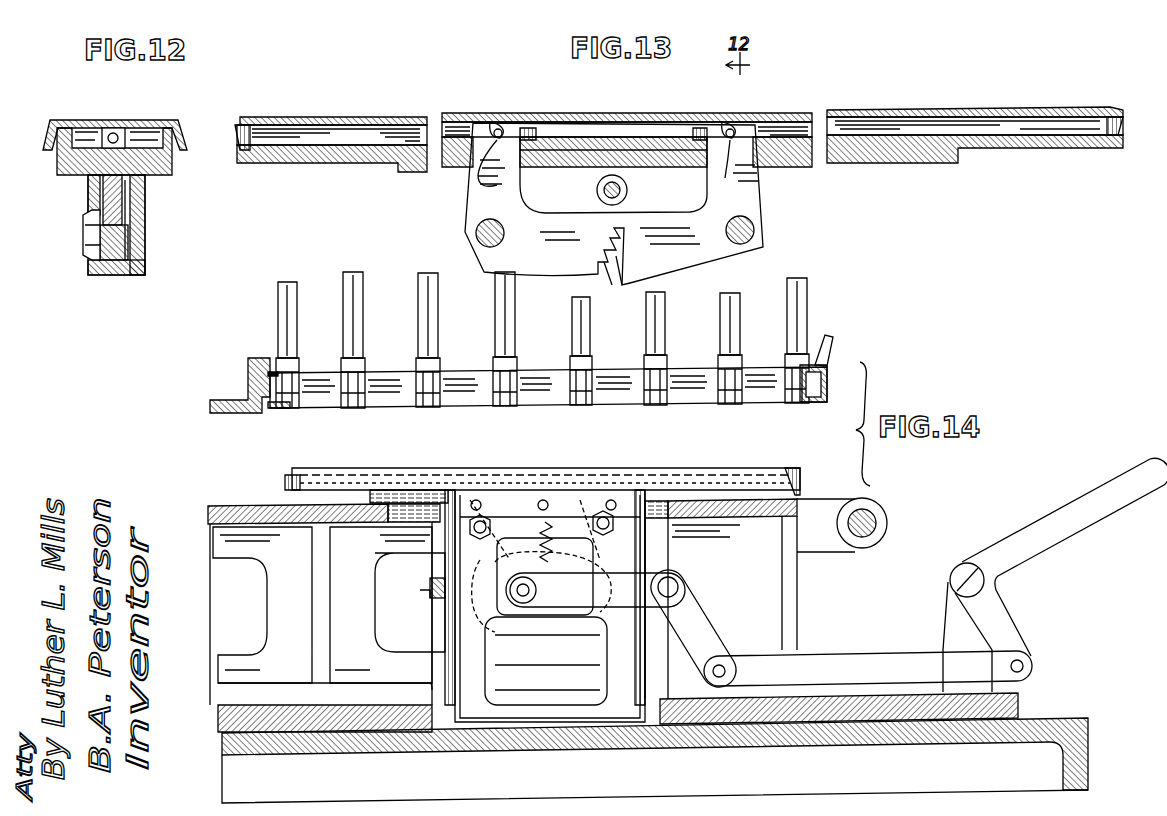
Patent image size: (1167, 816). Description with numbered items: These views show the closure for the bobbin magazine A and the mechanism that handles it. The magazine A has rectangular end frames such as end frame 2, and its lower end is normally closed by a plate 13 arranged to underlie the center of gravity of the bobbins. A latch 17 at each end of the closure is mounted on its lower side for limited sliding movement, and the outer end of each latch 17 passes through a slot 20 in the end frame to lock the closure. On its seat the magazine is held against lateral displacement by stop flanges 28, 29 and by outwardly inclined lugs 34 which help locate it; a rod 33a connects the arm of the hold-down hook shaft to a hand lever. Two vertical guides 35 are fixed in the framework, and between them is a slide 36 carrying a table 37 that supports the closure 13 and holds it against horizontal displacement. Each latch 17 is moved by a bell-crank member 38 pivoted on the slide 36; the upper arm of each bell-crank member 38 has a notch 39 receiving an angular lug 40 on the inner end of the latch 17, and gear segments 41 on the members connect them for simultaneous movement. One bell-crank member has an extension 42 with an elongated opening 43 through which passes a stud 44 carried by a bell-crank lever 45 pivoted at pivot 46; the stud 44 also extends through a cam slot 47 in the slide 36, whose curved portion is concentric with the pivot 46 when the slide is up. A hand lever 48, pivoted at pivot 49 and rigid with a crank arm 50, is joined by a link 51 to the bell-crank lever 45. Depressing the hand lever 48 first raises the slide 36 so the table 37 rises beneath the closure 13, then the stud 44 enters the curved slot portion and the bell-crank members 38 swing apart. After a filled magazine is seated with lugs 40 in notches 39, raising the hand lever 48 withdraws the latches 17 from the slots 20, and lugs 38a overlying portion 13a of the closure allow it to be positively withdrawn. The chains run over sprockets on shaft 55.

In FIG. 14, the end frame 2 is at (278, 410).
In FIG. 12, the plate 13 is at (63, 120).
In FIG. 13, the plate 13 is at (352, 117).
In FIG. 14, the plate 13 is at (398, 460).
In FIG. 13, the portion of the closure 13a is at (622, 137).
In FIG. 13, the latch 17 is at (240, 120).
In FIG. 14, the latch 17 is at (288, 470).
In FIG. 14, the slot 20 is at (288, 398).
In FIG. 14, the stop flange 28 is at (260, 358).
In FIG. 14, the stop flange 29 is at (826, 396).
In FIG. 14, the rod 33a is at (372, 592).
In FIG. 14, the lug 34 is at (828, 340).
In FIG. 12, the vertical guide 35 is at (146, 250).
In FIG. 14, the vertical guide 35 is at (430, 588).
In FIG. 12, the slide 36 is at (100, 268).
In FIG. 14, the slide 36 is at (605, 655).
In FIG. 12, the table 37 is at (57, 150).
In FIG. 13, the table 37 is at (992, 148).
In FIG. 14, the table 37 is at (800, 480).
In FIG. 12, the bell-crank member 38 is at (122, 200).
In FIG. 13, the bell-crank member 38 is at (464, 233).
In FIG. 14, the bell-crank member 38 is at (430, 598).
In FIG. 13, the lug 38a is at (540, 130).
In FIG. 13, the notch 39 is at (750, 186).
In FIG. 12, the angular lug 40 is at (118, 136).
In FIG. 13, the angular lug 40 is at (498, 125).
In FIG. 13, the gear segment 41 is at (612, 280).
In FIG. 14, the extension 42 is at (550, 606).
In FIG. 14, the elongated opening 43 is at (545, 620).
In FIG. 14, the stud 44 is at (523, 598).
In FIG. 14, the bell-crank lever 45 is at (690, 605).
In FIG. 14, the pivot 46 is at (675, 580).
In FIG. 14, the cam slot 47 is at (560, 537).
In FIG. 14, the hand lever 48 is at (1000, 545).
In FIG. 14, the pivot 49 is at (953, 575).
In FIG. 14, the crank arm 50 is at (1002, 612).
In FIG. 14, the link 51 is at (860, 658).
In FIG. 14, the shaft 55 is at (880, 515).
In FIG. 14, the magazine A is at (806, 300).